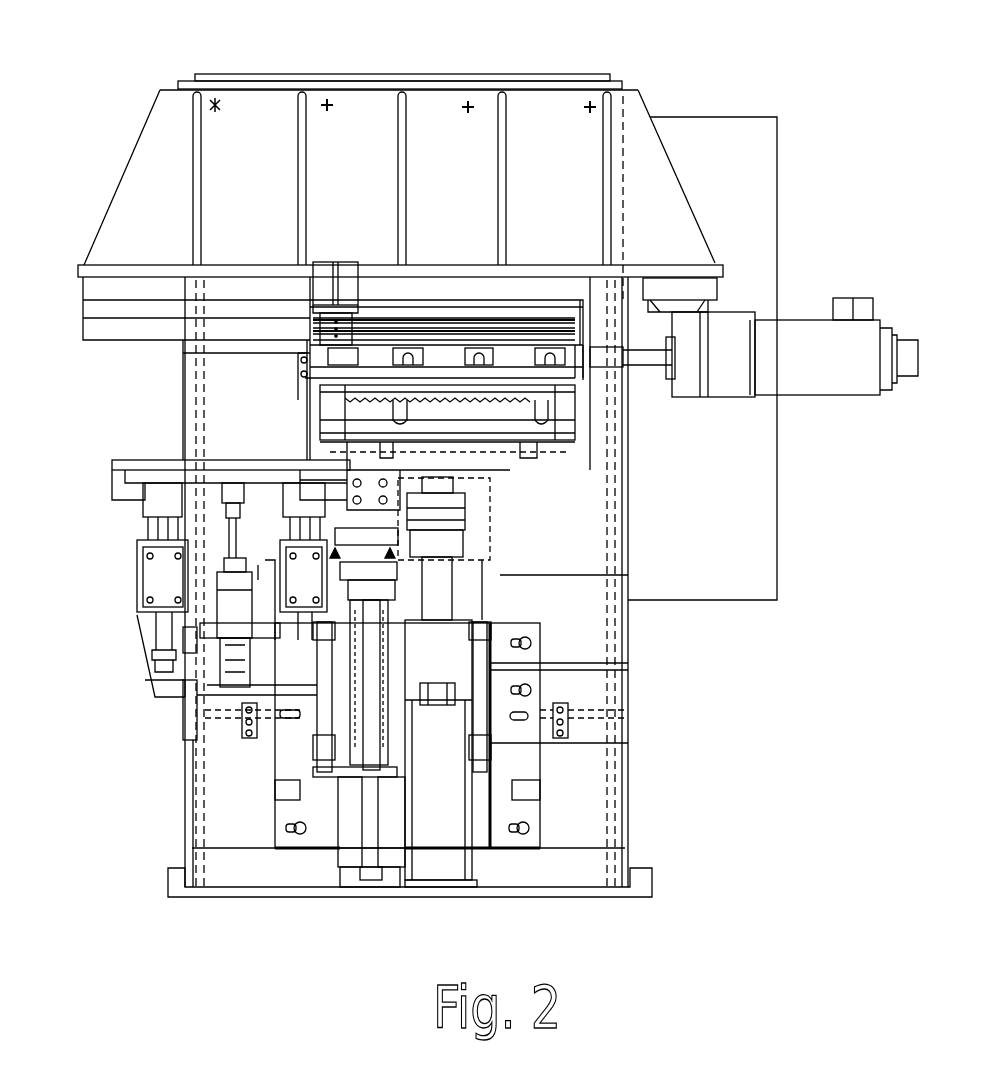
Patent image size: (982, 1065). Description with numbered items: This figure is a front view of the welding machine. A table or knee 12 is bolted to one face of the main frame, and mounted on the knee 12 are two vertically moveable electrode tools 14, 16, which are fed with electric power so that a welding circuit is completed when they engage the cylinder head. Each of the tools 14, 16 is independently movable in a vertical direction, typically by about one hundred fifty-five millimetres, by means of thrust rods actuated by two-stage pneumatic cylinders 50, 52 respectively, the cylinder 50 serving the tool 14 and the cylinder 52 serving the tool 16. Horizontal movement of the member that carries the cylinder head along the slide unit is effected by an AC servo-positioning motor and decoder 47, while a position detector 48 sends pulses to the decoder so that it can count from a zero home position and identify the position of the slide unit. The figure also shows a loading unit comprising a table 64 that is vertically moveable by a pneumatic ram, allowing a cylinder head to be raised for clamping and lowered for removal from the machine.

The table or knee 12 is at (648, 766).
The electrode tool 14 is at (455, 458).
The electrode tool 16 is at (340, 530).
The AC servo-positioning motor and decoder 47 is at (840, 383).
The position detector 48 is at (338, 262).
The two-stage pneumatic cylinder 50 is at (448, 752).
The two-stage pneumatic cylinder 52 is at (347, 738).
The table 64 is at (130, 460).